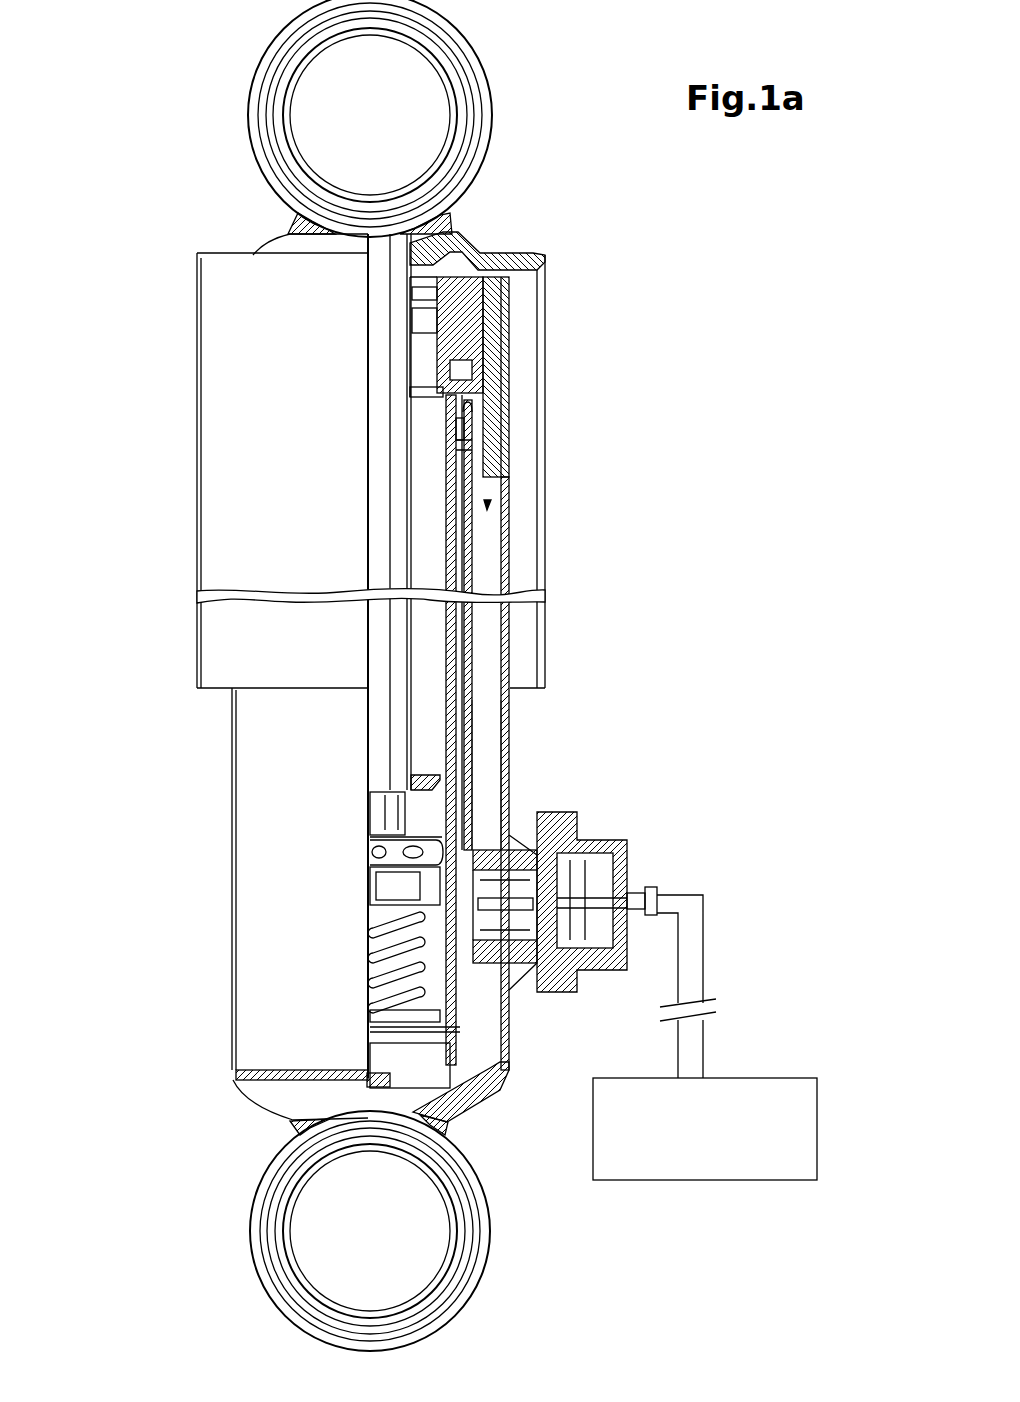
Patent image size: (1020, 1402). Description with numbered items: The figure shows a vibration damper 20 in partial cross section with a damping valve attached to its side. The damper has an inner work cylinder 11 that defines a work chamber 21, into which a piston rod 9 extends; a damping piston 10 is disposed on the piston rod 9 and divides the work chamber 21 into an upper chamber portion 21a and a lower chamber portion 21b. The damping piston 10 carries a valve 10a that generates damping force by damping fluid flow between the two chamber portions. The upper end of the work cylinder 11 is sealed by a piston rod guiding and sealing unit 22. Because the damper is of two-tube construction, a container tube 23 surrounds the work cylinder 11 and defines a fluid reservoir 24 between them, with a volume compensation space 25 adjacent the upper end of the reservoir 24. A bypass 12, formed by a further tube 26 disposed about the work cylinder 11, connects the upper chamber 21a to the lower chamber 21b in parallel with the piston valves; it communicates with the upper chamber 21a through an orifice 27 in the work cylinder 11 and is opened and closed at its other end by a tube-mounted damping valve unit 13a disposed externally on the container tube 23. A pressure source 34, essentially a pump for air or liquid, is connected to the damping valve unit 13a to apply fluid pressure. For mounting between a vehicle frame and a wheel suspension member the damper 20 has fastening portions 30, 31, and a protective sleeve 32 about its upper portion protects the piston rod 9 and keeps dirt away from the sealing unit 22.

The vibration damper 20 is at (124, 199).
The fastening portion 30 is at (467, 163).
The fastening portion 31 is at (463, 1283).
The protective sleeve 32 is at (545, 273).
The piston rod guiding and sealing unit 22 is at (510, 300).
The upper chamber portion 21a is at (462, 400).
The orifice 27 is at (457, 443).
The piston rod 9 is at (393, 495).
The volume compensation space 25 is at (477, 510).
The bypass 12 is at (460, 535).
The work cylinder 11 is at (458, 577).
The work chamber 21 is at (435, 628).
The container tube 23 is at (510, 700).
The fluid reservoir 24 is at (495, 725).
The tube 26 is at (470, 750).
The damping piston 10 is at (460, 863).
The valve 10a is at (470, 833).
The damping valve unit 13a is at (640, 889).
The lower chamber portion 21b is at (430, 1018).
The pressure source 34 is at (598, 1132).